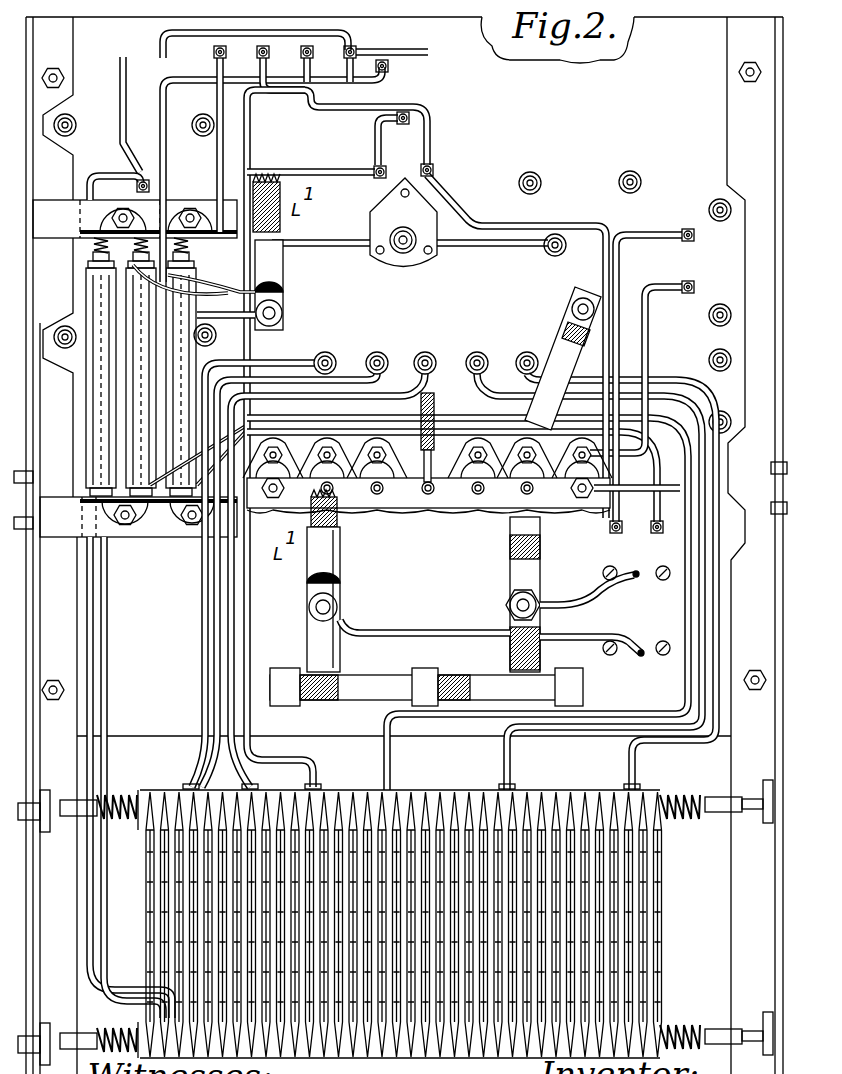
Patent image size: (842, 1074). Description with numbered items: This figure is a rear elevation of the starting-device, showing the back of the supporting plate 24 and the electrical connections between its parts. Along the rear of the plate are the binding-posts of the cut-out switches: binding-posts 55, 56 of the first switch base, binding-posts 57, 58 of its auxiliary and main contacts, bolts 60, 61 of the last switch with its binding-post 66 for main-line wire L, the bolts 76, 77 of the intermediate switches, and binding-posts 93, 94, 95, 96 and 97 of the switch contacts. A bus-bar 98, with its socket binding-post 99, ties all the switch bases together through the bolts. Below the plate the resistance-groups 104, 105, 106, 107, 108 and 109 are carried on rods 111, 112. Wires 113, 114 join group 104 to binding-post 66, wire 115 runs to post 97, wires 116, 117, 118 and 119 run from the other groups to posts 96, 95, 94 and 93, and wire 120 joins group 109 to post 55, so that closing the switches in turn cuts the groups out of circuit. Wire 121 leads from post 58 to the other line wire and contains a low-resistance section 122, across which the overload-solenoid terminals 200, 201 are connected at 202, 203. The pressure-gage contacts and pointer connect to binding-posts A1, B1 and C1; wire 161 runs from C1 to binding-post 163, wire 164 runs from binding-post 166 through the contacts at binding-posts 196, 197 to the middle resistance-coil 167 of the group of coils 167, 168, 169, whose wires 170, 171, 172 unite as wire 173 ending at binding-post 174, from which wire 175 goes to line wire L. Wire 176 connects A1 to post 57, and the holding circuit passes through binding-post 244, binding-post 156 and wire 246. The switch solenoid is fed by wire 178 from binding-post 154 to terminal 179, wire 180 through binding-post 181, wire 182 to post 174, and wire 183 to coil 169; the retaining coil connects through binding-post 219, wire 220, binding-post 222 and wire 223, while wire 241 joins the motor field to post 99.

The supporting plate 24 is at (328, 580).
The binding-post 55 is at (580, 498).
The binding-post 56 is at (580, 452).
The binding-post 57 is at (560, 255).
The binding-post 58 is at (574, 304).
The bolt 60 is at (300, 512).
The bolt 61 is at (278, 453).
The binding-post 66 is at (287, 318).
The bolt 76 is at (330, 453).
The bolt 77 is at (345, 500).
The binding-post 93 is at (528, 352).
The binding-post 94 is at (480, 352).
The binding-post 95 is at (428, 352).
The binding-post 96 is at (379, 352).
The binding-post 97 is at (330, 352).
The bus-bar 98 is at (452, 515).
The socket binding-post 99 is at (476, 452).
The resistance-group 104 is at (175, 788).
The resistance-group 105 is at (234, 770).
The resistance-group 106 is at (289, 788).
The resistance-group 107 is at (350, 792).
The resistance-group 108 is at (462, 790).
The resistance-group 109 is at (565, 790).
The rod 111 is at (52, 832).
The rod 112 is at (62, 1022).
The wire 113 is at (85, 612).
The wire 114 is at (110, 624).
The wire 115 is at (203, 652).
The wire 116 is at (232, 600).
The wire 117 is at (247, 672).
The wire 118 is at (387, 748).
The wire 119 is at (510, 755).
The wire 120 is at (640, 752).
The wire 121 is at (336, 632).
The section 122 is at (392, 680).
The binding-post 154 is at (389, 67).
The binding-post 156 is at (408, 113).
The wire 161 is at (303, 168).
The binding-post 163 is at (386, 166).
The wire 164 is at (432, 128).
The binding-post 166 is at (436, 171).
The resistance-coil 167 is at (134, 522).
The resistance-coil 168 is at (191, 523).
The resistance-coil 169 is at (100, 432).
The wire 170 is at (197, 295).
The wire 171 is at (147, 318).
The wire 172 is at (196, 278).
The wire 173 is at (244, 172).
The binding-post 174 is at (358, 49).
The wire 175 is at (420, 51).
The wire 176 is at (216, 101).
The wire 178 is at (165, 95).
The terminal 179 is at (88, 290).
The wire 180 is at (123, 128).
The binding-post 181 is at (148, 178).
The wire 182 is at (160, 40).
The wire 183 is at (86, 380).
The binding-post 196 is at (657, 534).
The binding-post 197 is at (616, 534).
The terminal 200 is at (450, 633).
The terminal 201 is at (555, 606).
The connection 202 is at (345, 600).
The connection 203 is at (506, 603).
The binding-post 219 is at (694, 288).
The wire 220 is at (650, 345).
The binding-post 222 is at (693, 240).
The wire 223 is at (636, 234).
The wire 241 is at (435, 410).
The binding-post 244 is at (403, 255).
The wire 246 is at (375, 140).
The binding-post A1 is at (204, 50).
The binding-post B1 is at (298, 46).
The binding-post C1 is at (251, 48).